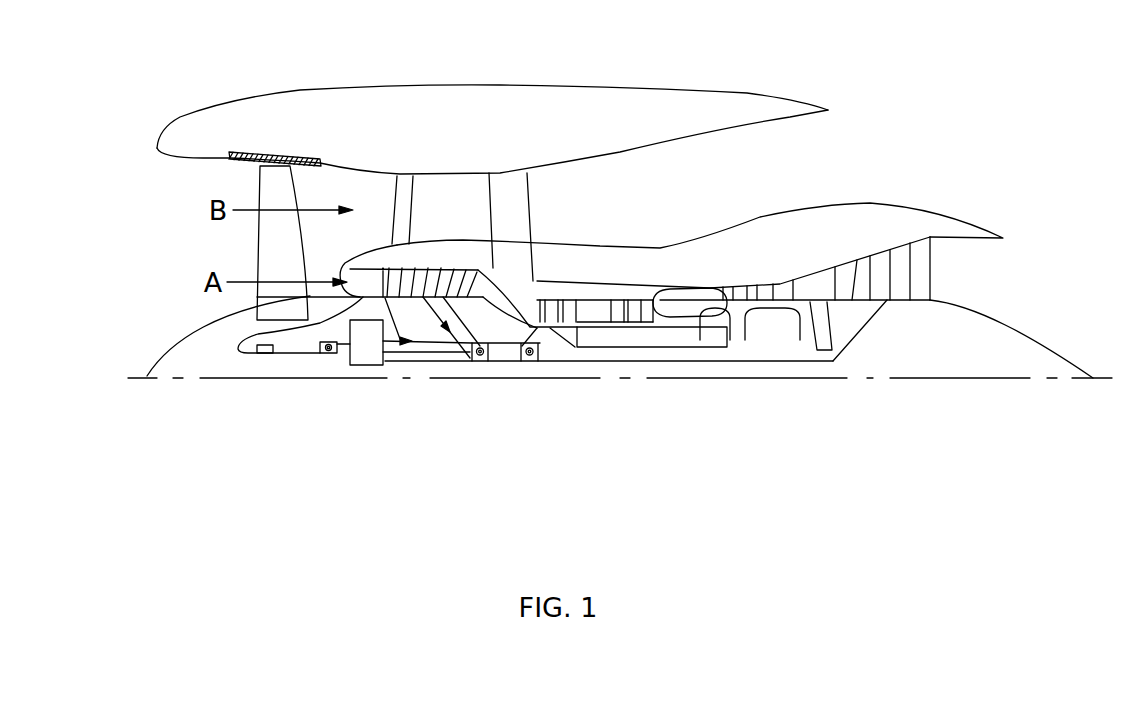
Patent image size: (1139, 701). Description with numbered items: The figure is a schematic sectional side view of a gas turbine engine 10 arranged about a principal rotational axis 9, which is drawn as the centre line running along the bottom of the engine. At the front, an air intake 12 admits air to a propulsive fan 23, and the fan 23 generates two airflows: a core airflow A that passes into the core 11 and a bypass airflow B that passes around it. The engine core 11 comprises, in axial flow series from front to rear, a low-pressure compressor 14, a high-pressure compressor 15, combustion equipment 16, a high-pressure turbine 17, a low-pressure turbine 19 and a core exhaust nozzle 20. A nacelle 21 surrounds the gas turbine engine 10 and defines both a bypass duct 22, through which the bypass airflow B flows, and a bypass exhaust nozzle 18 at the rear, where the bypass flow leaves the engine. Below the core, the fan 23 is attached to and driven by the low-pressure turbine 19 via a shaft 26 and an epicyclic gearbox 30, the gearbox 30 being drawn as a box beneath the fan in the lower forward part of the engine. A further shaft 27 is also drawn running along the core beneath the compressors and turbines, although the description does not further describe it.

The principal rotational axis 9 is at (892, 379).
The gas turbine engine 10 is at (226, 99).
The core 11 is at (665, 270).
The air intake 12 is at (178, 201).
The low-pressure compressor 14 is at (443, 243).
The high-pressure compressor 15 is at (597, 303).
The combustion equipment 16 is at (693, 310).
The high-pressure turbine 17 is at (750, 290).
The bypass exhaust nozzle 18 is at (888, 155).
The low-pressure turbine 19 is at (900, 257).
The core exhaust nozzle 20 is at (977, 280).
The nacelle 21 is at (515, 102).
The bypass duct 22 is at (797, 171).
The propulsive fan 23 is at (260, 247).
The shaft 26 is at (597, 363).
The high-pressure shaft 27 is at (640, 347).
The epicyclic gearbox 30 is at (367, 347).